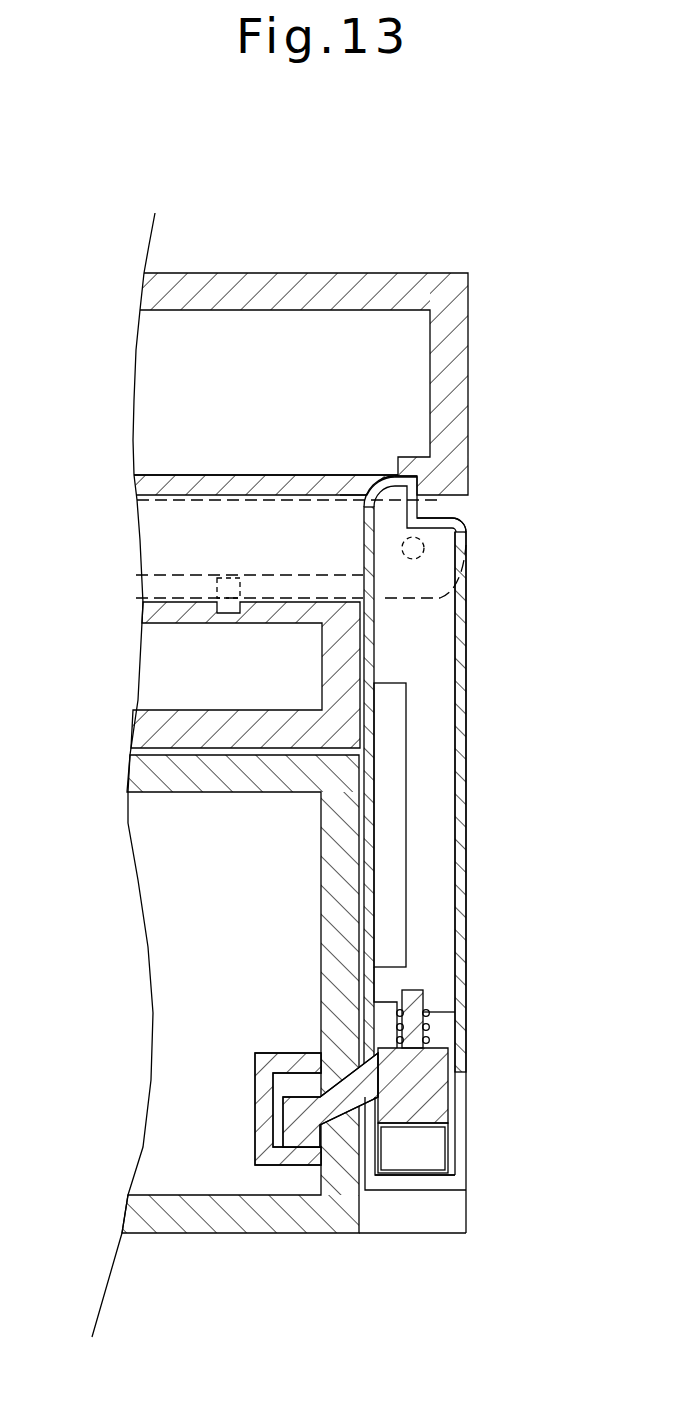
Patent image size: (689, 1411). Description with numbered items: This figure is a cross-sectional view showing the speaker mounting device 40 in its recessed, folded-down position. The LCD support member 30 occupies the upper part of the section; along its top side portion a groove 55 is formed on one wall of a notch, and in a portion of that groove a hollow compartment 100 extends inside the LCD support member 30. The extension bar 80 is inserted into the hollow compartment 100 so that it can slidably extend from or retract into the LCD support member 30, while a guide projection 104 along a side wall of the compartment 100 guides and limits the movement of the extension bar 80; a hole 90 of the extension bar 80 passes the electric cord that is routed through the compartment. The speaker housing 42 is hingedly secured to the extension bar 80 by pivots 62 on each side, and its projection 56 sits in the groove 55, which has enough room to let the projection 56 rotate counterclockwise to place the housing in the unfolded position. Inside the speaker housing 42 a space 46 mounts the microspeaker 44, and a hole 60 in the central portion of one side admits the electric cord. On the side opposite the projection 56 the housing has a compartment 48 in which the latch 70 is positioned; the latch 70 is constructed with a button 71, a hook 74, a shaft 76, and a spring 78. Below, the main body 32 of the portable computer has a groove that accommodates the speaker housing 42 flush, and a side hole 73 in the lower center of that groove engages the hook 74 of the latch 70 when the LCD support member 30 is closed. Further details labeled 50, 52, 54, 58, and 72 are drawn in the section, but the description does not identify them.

The LCD support member 30 is at (468, 327).
The main body 32 is at (220, 1233).
The speaker mounting device 40 is at (488, 652).
The speaker housing 42 is at (467, 847).
The microspeaker 44 is at (408, 802).
The space 46 is at (457, 745).
The compartment 48 is at (452, 1180).
The housing 50 is at (462, 1110).
The spring chamber wall 52 is at (456, 1010).
The spring seat 54 is at (424, 1008).
The groove 55 is at (368, 490).
The projection 56 is at (395, 474).
The hook corner 58 is at (450, 515).
The hole 60 is at (368, 545).
The pivots 62 is at (425, 548).
The latch 70 is at (412, 1145).
The button 71 is at (448, 1143).
The block 72 is at (440, 1088).
The side hole 73 is at (283, 1080).
The hook 74 is at (285, 1118).
The shaft 76 is at (413, 988).
The spring 78 is at (397, 1028).
The extension bar 80 is at (165, 503).
The hole 90 is at (285, 600).
The hollow compartment 100 is at (230, 470).
The guide projection 104 is at (215, 585).